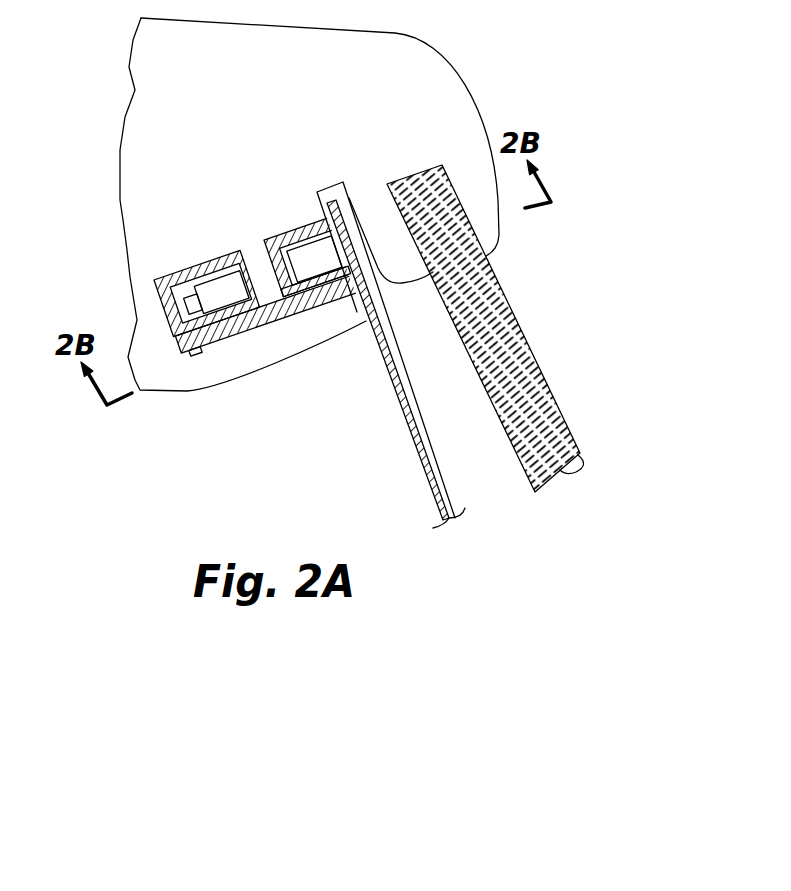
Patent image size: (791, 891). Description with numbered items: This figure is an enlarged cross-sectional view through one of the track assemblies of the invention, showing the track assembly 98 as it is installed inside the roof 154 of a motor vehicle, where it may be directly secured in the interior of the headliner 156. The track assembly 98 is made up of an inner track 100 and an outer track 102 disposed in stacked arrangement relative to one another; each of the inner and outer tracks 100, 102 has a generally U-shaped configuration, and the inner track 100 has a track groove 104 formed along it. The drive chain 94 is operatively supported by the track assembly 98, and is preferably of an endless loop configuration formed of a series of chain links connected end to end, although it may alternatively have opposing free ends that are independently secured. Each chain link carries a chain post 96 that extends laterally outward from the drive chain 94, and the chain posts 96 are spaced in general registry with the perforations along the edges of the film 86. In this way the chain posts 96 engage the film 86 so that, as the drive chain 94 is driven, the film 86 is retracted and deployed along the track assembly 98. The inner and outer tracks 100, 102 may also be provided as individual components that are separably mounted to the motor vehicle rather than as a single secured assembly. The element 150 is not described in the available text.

The roof 154 is at (388, 31).
The headliner 156 is at (193, 391).
The mounting bar 150 is at (508, 303).
The film 86 is at (427, 463).
The inner track 100 is at (331, 298).
The track assembly 98 is at (211, 296).
The drive chain 94 is at (303, 167).
The chain post 96 is at (163, 303).
The outer track 102 is at (238, 336).
The track groove 104 is at (306, 338).